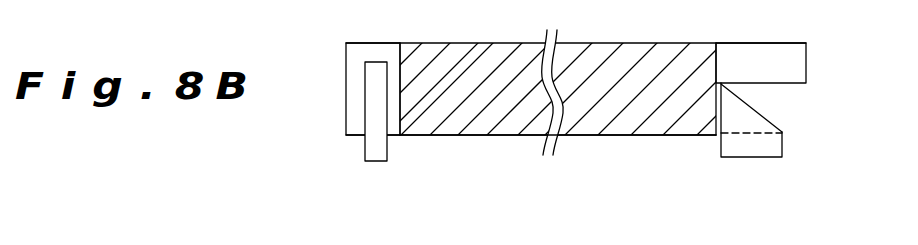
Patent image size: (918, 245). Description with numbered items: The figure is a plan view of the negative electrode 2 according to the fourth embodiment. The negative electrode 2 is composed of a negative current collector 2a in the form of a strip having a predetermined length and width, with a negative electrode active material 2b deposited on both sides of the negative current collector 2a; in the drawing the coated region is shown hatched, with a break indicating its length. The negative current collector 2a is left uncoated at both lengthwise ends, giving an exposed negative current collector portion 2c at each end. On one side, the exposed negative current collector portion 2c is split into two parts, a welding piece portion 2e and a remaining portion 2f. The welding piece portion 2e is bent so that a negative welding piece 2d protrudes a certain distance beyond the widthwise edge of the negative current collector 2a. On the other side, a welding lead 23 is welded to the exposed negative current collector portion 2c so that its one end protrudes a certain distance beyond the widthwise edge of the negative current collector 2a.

The negative electrode 2 is at (595, 137).
The negative current collector 2a is at (503, 137).
The negative electrode active material 2b is at (632, 113).
The exposed negative current collector portion 2c is at (595, 132).
The negative welding piece 2d is at (795, 155).
The welding piece portion 2e is at (795, 108).
The remaining portion 2f is at (792, 62).
The welding lead 23 is at (373, 155).